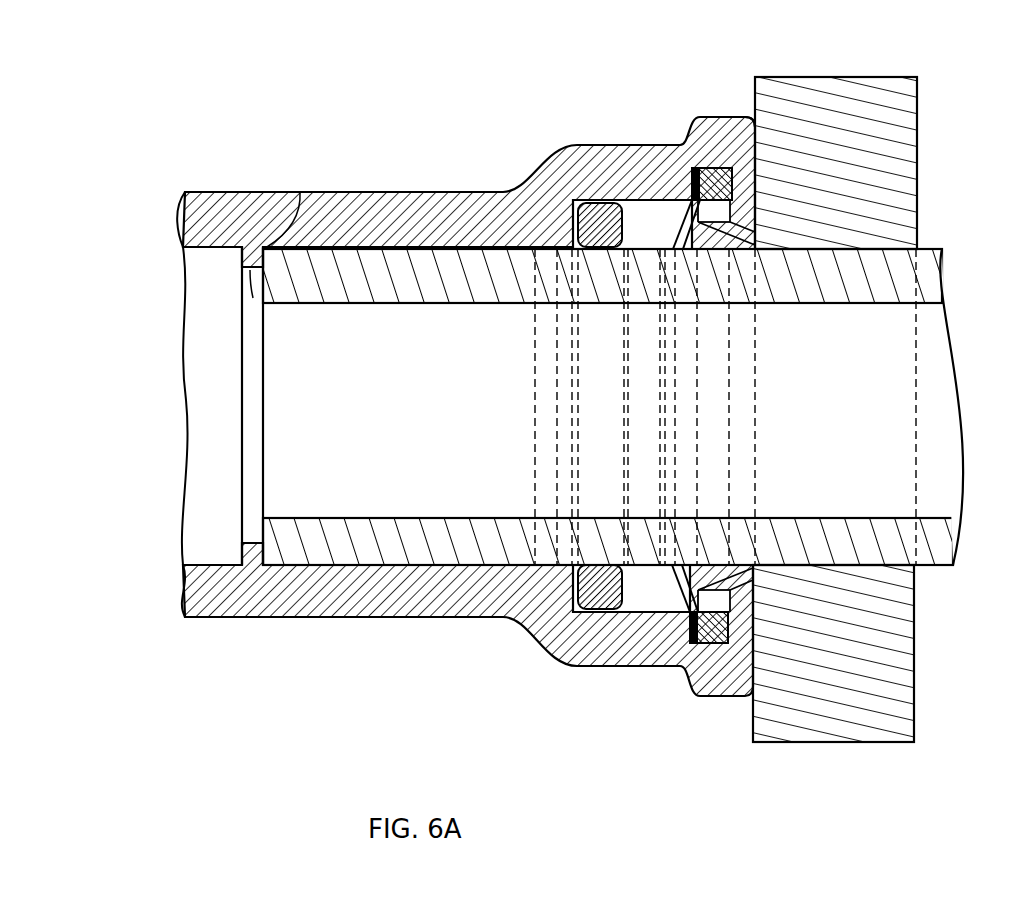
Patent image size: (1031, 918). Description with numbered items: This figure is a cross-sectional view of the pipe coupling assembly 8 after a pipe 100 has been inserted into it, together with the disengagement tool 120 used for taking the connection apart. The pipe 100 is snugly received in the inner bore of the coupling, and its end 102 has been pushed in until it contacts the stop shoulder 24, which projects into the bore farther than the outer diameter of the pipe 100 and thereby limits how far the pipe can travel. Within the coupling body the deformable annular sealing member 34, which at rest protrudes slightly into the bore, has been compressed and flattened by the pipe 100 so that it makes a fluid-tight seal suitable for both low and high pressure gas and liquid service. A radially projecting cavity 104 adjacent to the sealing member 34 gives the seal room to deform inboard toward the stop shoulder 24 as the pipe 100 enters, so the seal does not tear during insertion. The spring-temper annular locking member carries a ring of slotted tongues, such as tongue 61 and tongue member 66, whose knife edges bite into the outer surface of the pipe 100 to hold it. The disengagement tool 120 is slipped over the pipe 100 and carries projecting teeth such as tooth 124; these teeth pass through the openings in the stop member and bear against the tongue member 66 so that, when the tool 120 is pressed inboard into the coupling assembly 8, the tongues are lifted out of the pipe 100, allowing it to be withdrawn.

The pipe coupling assembly 8 is at (468, 178).
The stop shoulder 24 is at (242, 297).
The deformable annular sealing member 34 is at (590, 205).
The tongue 61 is at (660, 582).
The tongue member 66 is at (710, 168).
The pipe 100 is at (935, 262).
The end of pipe 102 is at (300, 192).
The radially projecting cavity 104 is at (568, 240).
The disengagement tool 120 is at (905, 77).
The tooth 124 is at (712, 117).